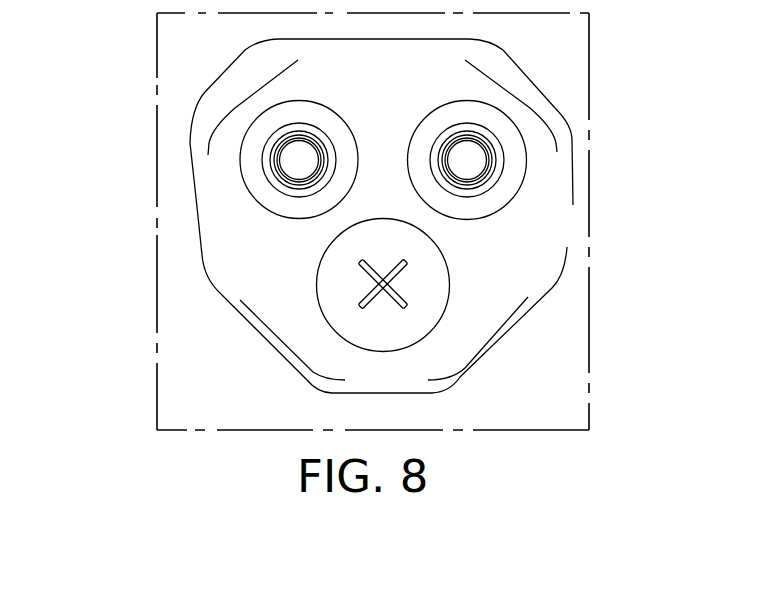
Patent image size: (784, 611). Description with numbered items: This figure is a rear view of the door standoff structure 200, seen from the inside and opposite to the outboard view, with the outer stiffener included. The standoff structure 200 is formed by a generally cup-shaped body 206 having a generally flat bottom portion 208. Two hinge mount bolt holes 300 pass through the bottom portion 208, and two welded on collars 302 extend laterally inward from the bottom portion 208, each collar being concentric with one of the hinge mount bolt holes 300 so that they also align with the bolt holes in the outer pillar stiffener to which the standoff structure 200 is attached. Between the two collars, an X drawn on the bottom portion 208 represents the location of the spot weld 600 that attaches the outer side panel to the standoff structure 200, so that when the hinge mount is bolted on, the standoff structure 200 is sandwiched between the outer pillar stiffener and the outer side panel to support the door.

The standoff structure 200 is at (128, 363).
The cup-shaped body 206 is at (550, 233).
The bottom portion 208 is at (467, 325).
The hinge mount bolt holes 300 is at (287, 155).
The welded on collars 302 is at (250, 193).
The spot weld 600 is at (390, 290).